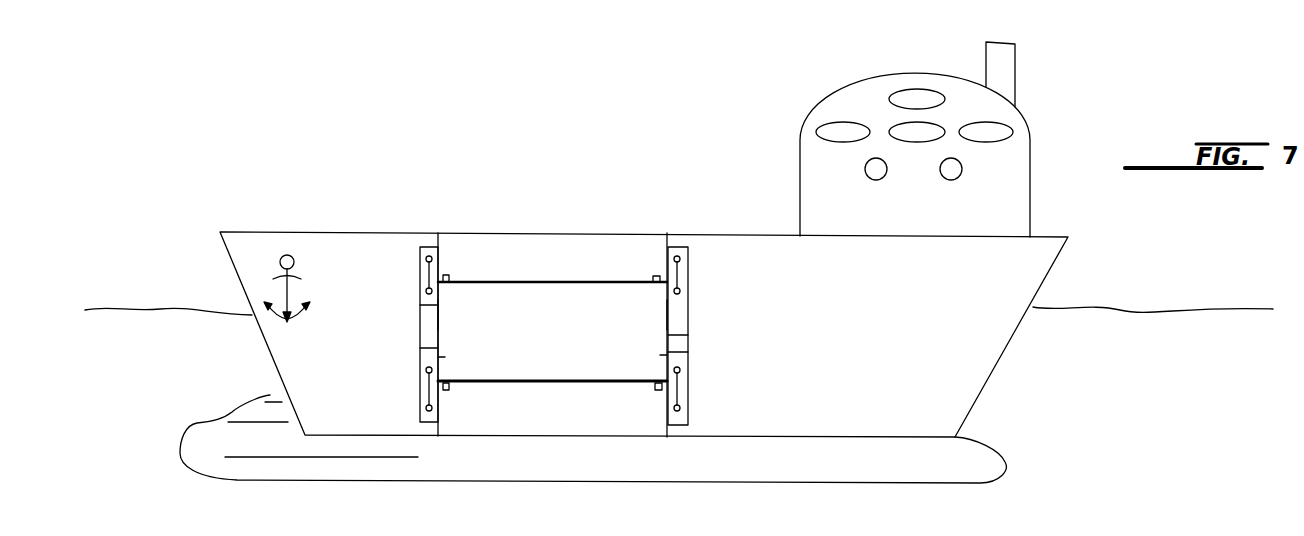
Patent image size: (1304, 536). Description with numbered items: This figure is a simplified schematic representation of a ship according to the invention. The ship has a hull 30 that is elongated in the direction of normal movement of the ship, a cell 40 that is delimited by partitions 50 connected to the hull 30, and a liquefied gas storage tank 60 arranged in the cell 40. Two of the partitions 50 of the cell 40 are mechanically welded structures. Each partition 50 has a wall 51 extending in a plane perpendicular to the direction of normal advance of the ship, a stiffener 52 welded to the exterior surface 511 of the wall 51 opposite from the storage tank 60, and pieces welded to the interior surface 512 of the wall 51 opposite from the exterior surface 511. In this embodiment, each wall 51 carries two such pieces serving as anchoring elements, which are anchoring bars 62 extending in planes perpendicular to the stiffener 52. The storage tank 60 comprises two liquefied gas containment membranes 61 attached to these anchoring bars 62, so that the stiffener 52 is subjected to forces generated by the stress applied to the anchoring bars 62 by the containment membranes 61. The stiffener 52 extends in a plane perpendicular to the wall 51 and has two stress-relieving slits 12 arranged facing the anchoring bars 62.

The hull 30 is at (233, 273).
The cell 40 is at (538, 253).
The partition 50 is at (407, 270).
The stress-relieving slit 12 is at (420, 277).
The wall 51 is at (443, 313).
The exterior surface 511 is at (422, 313).
The interior surface 512 is at (440, 357).
The stiffener 52 is at (425, 348).
The liquefied gas storage tank 60 is at (550, 327).
The liquefied gas containment membrane 61 is at (575, 280).
The anchoring bar 62 is at (443, 275).